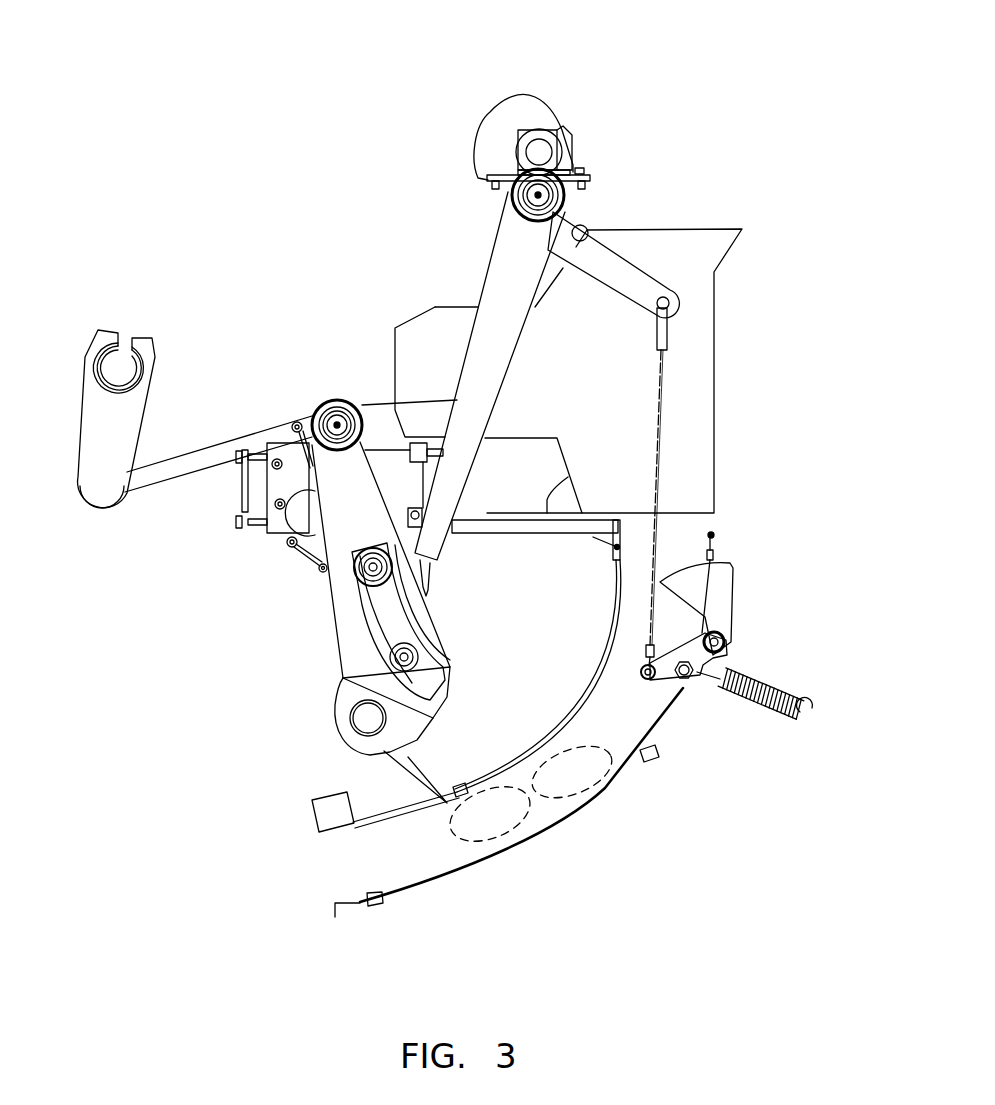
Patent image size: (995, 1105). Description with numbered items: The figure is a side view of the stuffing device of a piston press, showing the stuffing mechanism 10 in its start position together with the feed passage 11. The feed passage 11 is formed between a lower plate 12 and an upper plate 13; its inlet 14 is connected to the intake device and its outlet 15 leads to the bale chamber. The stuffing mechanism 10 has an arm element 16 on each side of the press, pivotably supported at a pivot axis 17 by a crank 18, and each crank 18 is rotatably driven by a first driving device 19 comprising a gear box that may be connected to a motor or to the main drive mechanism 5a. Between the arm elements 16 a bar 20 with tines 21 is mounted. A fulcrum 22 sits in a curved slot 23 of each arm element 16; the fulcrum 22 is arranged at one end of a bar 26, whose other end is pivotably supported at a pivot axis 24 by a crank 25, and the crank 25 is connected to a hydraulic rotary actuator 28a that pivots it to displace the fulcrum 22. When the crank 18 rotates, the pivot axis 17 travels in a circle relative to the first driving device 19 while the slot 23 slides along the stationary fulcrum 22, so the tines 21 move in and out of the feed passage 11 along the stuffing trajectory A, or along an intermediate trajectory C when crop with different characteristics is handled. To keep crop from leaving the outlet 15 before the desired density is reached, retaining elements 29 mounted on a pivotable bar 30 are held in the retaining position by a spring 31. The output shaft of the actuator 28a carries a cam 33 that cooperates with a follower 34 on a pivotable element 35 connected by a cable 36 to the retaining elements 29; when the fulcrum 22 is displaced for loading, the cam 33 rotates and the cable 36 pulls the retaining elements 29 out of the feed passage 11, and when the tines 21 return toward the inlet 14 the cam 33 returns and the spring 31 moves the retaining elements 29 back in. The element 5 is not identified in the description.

The hopper 5 is at (690, 253).
The main drive mechanism 5a is at (103, 430).
The stuffing mechanism 10 is at (298, 322).
The feed passage 11 is at (635, 743).
The lower plate 12 is at (573, 822).
The upper plate 13 is at (590, 697).
The inlet 14 is at (357, 865).
The outlet 15 is at (680, 530).
The arm element 16 is at (344, 589).
The pivot axis 17 is at (337, 425).
The crank 18 is at (298, 468).
The first driving device 19 is at (285, 530).
The bar 20 is at (405, 760).
The tines 21 is at (313, 779).
The fulcrum 22 is at (368, 718).
The slot 23 is at (386, 627).
The pivot axis 24 is at (538, 195).
The crank 25 is at (552, 163).
The bar 26 is at (483, 357).
The hydraulic rotary actuator 28a is at (572, 138).
The retaining elements 29 is at (688, 585).
The pivotable bar 30 is at (714, 642).
The spring 31 is at (760, 697).
The cam 33 is at (510, 117).
The follower 34 is at (508, 188).
The pivotable element 35 is at (628, 272).
The cable 36 is at (660, 433).
The trajectory A is at (530, 840).
The trajectory C is at (552, 748).